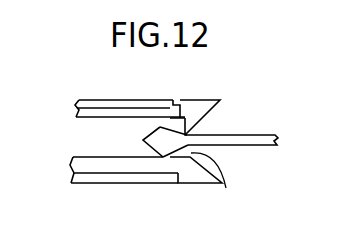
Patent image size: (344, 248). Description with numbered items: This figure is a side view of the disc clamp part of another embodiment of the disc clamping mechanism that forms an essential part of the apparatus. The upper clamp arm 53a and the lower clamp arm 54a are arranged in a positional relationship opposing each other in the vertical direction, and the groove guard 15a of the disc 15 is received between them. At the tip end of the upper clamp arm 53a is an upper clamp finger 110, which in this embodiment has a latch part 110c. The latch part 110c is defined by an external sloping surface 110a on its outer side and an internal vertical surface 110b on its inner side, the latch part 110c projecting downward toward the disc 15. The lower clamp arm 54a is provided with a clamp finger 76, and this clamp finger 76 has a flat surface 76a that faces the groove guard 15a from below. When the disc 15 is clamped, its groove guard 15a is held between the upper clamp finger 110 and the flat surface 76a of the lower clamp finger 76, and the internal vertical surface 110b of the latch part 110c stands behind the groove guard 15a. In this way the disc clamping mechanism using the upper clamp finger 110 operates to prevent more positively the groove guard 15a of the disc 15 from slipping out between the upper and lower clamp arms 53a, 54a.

The upper clamp arm 53a is at (115, 99).
The upper clamp finger 110 is at (90, 117).
The external sloping surface 110a is at (200, 126).
The internal vertical surface 110b is at (172, 104).
The latch part 110c is at (209, 111).
The disc 15 is at (232, 146).
The groove guard 15a is at (143, 139).
The lower clamp arm 54a is at (125, 177).
The clamp finger 76 is at (193, 176).
The flat surface 76a is at (223, 189).